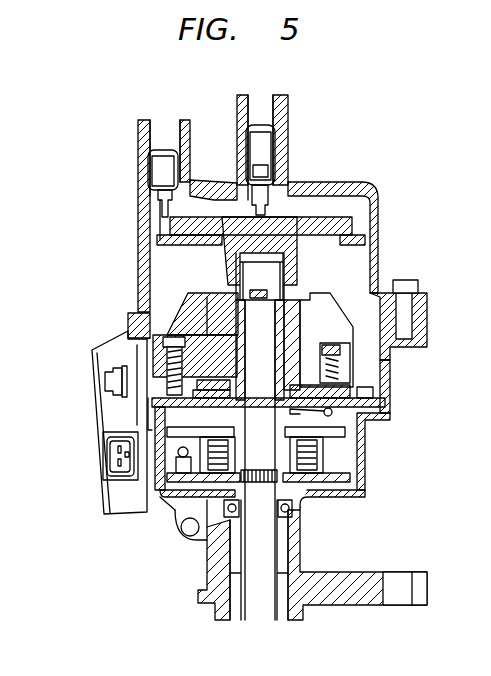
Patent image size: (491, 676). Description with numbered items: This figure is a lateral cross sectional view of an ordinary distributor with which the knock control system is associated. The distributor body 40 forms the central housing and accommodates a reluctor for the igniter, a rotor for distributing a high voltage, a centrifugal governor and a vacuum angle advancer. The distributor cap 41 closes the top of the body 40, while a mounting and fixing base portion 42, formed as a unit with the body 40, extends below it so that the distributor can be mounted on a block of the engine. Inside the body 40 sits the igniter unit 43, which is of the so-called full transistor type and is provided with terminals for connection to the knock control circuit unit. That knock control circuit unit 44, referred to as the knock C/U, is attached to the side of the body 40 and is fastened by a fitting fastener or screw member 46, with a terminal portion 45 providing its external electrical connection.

The distributor body 40 is at (388, 395).
The distributor cap 41 is at (380, 242).
The mounting and fixing base portion 42 is at (345, 576).
The igniter unit 43 is at (187, 297).
The knock control circuit unit 44 is at (110, 410).
The terminal portion 45 is at (110, 477).
The fitting fastener or screw member 46 is at (103, 379).